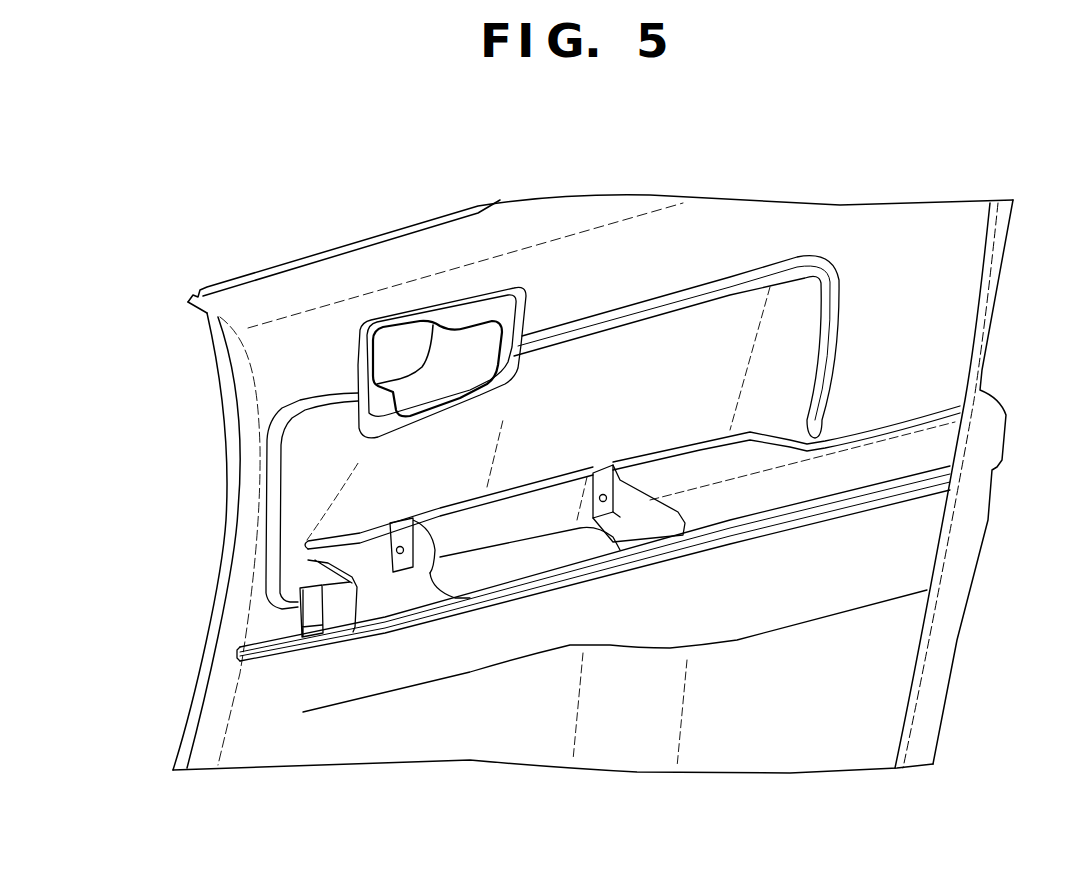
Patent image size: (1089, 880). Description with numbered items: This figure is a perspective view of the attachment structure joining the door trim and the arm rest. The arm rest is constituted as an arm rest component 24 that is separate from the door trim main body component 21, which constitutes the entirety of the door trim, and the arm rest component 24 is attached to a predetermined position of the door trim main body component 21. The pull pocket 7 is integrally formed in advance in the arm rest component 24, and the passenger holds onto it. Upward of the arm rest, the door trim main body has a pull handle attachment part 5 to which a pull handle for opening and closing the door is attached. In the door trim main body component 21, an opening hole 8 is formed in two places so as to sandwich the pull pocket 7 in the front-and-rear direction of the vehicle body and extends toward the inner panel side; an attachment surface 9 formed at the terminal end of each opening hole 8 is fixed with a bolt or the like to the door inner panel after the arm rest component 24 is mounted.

The pull handle attachment part 5 is at (458, 360).
The pull pocket 7 is at (540, 510).
The opening hole 8 is at (414, 575).
The attachment surface 9 is at (308, 552).
The door trim main body component 21 is at (308, 453).
The arm rest component 24 is at (712, 470).